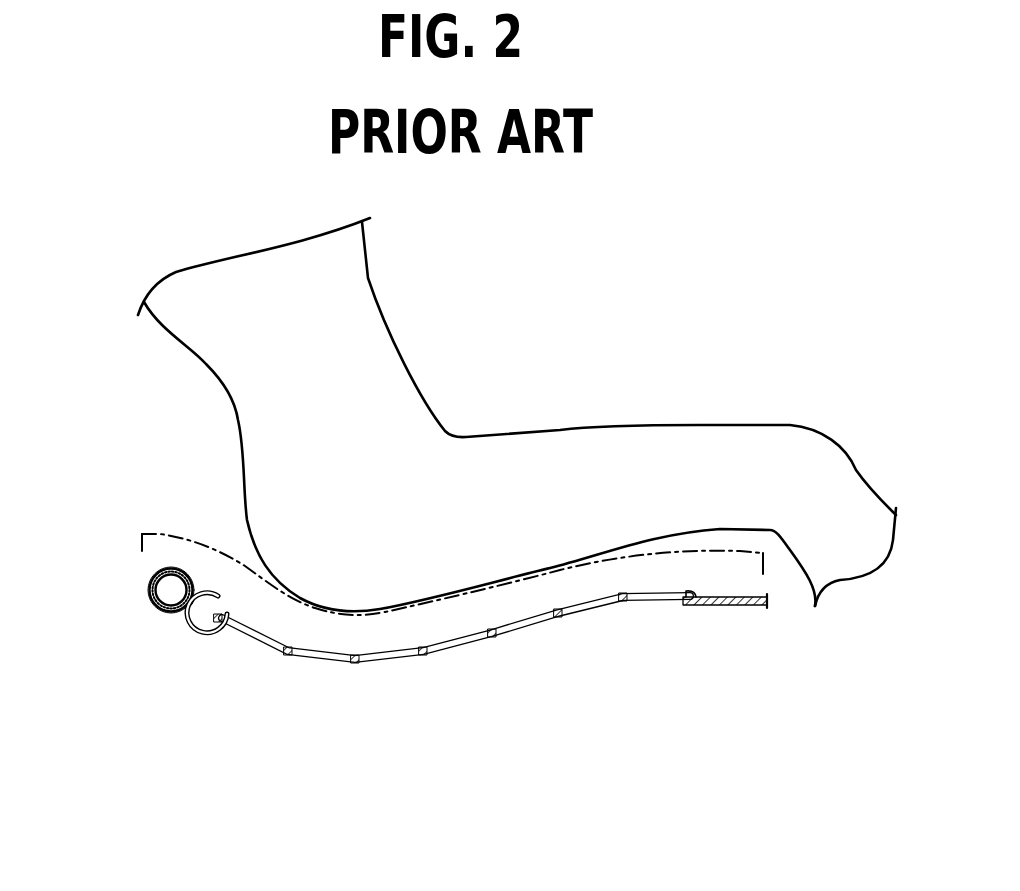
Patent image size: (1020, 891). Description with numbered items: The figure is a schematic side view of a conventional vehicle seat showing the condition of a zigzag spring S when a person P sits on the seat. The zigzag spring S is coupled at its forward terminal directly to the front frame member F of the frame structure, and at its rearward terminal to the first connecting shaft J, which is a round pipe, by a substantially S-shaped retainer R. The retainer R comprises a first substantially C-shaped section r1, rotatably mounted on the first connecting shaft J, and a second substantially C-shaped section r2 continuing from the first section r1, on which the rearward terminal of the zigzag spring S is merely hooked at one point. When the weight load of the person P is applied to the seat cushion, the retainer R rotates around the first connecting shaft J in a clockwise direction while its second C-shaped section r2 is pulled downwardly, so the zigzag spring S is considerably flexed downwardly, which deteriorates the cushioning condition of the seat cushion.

The person P is at (581, 426).
The zigzag spring S is at (462, 650).
The front frame member F is at (735, 607).
The retainer R is at (170, 562).
The first substantially C-shaped section r1 is at (149, 590).
The second substantially C-shaped section r2 is at (210, 637).
The first connecting shaft J is at (172, 612).